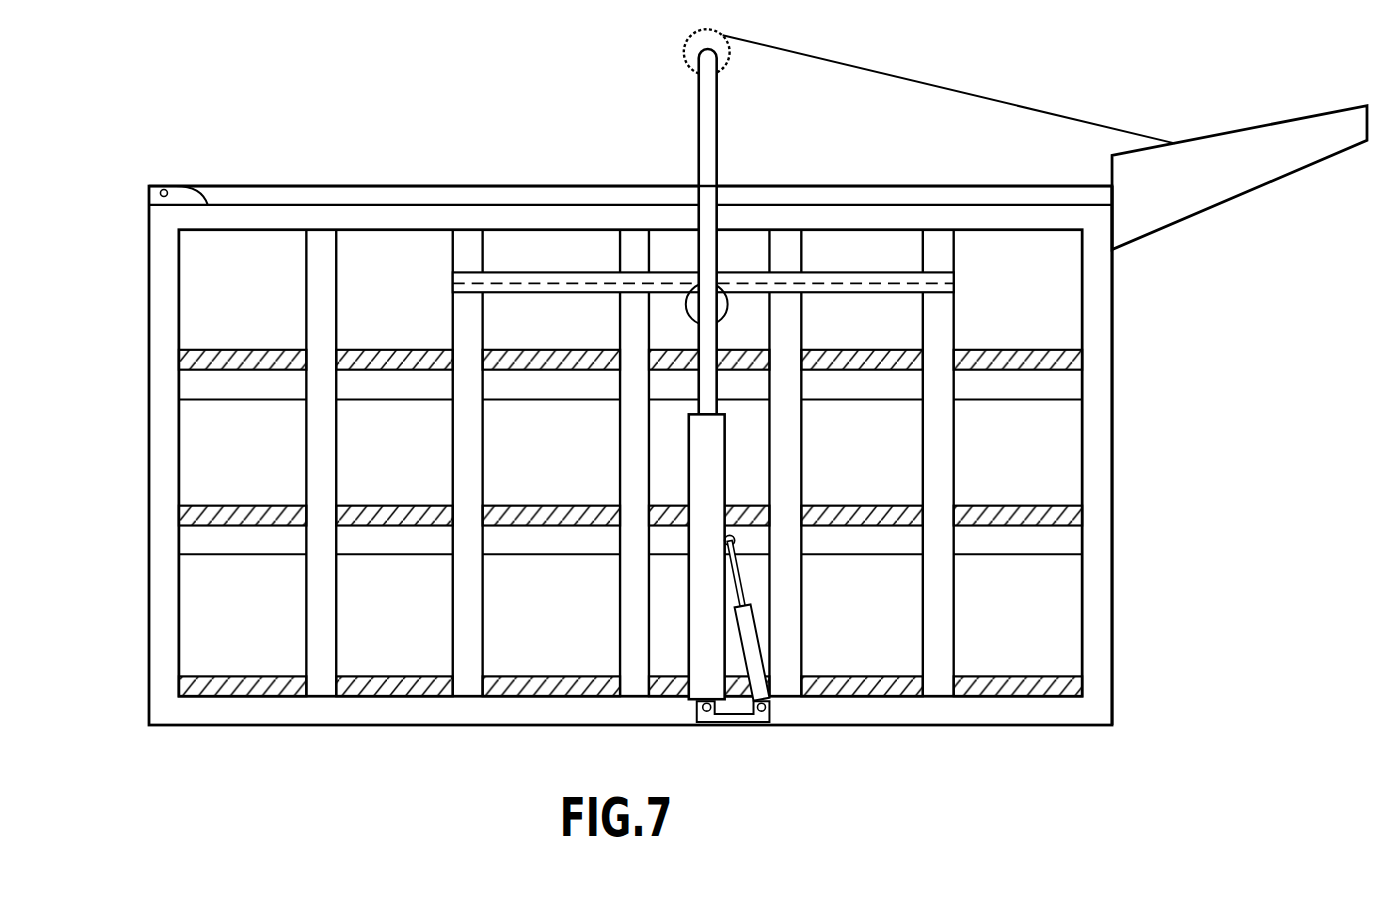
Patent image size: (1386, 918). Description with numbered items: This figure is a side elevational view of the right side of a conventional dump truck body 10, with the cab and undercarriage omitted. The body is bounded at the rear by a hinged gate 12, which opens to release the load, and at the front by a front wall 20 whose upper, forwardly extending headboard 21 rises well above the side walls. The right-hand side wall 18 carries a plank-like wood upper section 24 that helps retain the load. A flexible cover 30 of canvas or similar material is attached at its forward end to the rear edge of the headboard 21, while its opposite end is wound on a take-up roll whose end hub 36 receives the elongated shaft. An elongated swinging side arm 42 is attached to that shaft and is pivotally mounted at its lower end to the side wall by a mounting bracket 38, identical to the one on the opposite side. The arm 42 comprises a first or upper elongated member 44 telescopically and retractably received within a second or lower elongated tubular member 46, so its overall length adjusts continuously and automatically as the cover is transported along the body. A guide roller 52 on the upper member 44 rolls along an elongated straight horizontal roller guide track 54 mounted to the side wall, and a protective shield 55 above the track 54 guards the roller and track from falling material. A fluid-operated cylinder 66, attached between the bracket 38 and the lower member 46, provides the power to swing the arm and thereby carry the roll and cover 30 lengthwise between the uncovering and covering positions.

The truck body 10 is at (297, 164).
The rear-end wall or hinged gate 12 is at (145, 697).
The right-hand side wall 18 is at (258, 632).
The front wall 20 is at (1114, 695).
The headboard 21 is at (1280, 152).
The plank-like wood upper section 24 is at (970, 190).
The flexible cover 30 is at (945, 80).
The hub 36 is at (690, 48).
The mounting bracket 38 is at (748, 720).
The elongated swinging side arm 42 is at (718, 140).
The first or upper elongated member 44 is at (695, 258).
The second or lower elongated tubular member 46 is at (685, 625).
The guide roller 52 is at (722, 298).
The roller guide track 54 is at (850, 284).
The protective shield 55 is at (830, 270).
The fluid-operated cylinder 66 is at (757, 648).